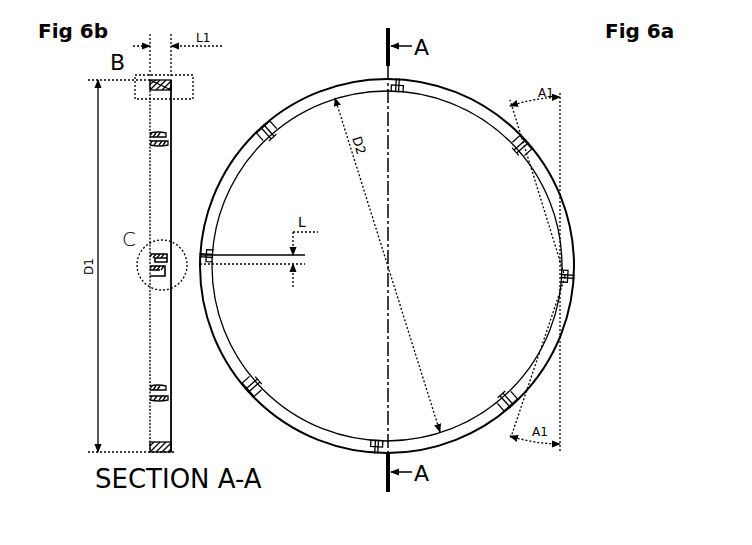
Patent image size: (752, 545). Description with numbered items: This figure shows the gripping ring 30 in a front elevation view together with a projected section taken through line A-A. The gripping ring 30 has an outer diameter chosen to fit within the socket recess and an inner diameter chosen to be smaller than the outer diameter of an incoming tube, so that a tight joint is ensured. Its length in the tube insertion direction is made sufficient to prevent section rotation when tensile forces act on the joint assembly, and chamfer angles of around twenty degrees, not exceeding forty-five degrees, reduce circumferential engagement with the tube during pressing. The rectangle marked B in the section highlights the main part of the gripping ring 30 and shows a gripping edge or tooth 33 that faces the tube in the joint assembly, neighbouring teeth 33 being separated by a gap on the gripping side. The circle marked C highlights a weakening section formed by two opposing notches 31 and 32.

In FIG. 6A, the gripping ring 30 is at (484, 66).
In FIG. 6B, the notch 31 is at (160, 259).
In FIG. 6B, the notch 32 is at (168, 271).
In FIG. 6B, the tooth 33 is at (160, 85).